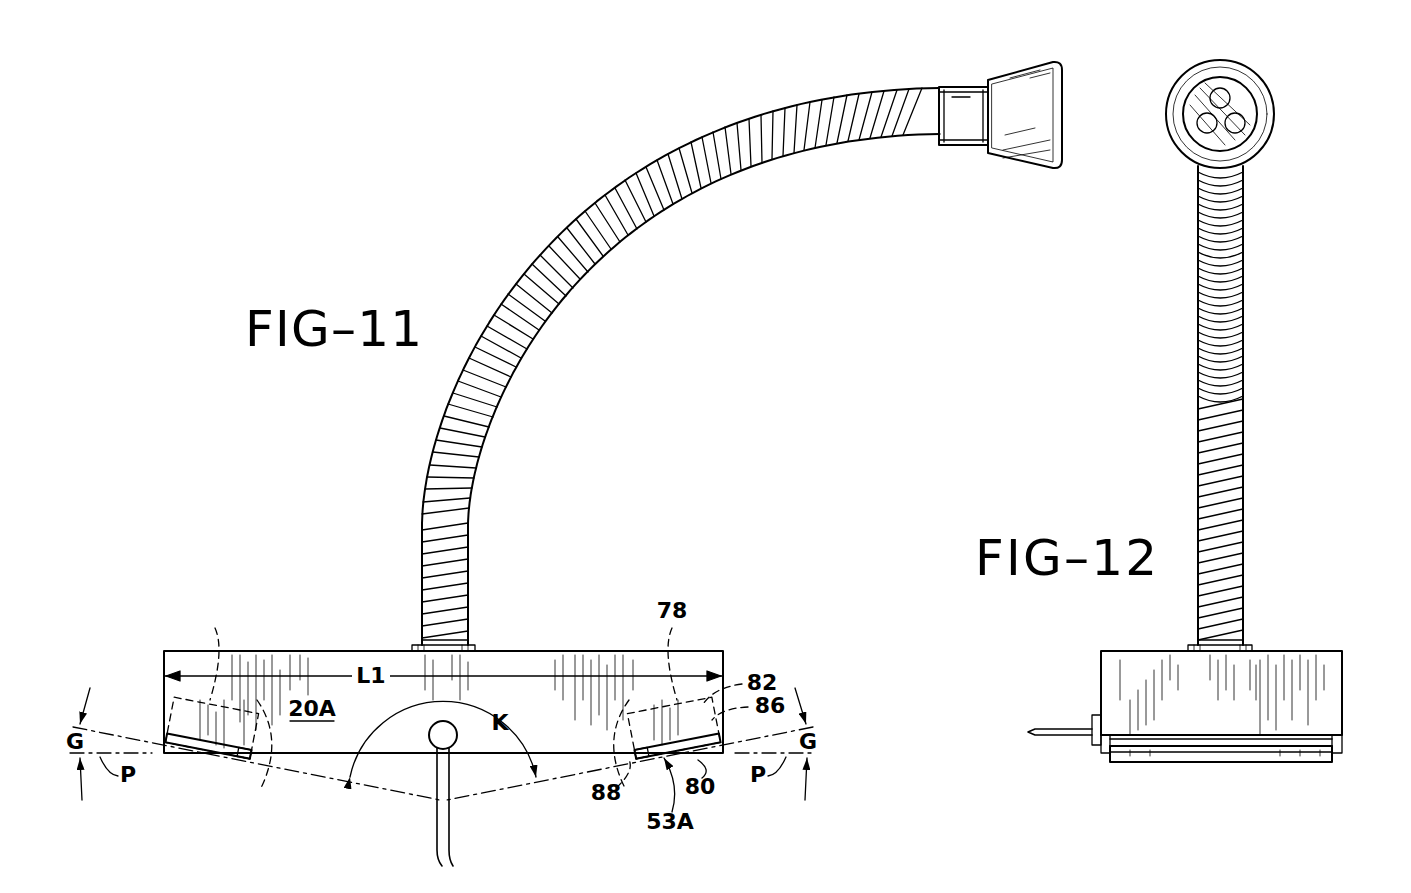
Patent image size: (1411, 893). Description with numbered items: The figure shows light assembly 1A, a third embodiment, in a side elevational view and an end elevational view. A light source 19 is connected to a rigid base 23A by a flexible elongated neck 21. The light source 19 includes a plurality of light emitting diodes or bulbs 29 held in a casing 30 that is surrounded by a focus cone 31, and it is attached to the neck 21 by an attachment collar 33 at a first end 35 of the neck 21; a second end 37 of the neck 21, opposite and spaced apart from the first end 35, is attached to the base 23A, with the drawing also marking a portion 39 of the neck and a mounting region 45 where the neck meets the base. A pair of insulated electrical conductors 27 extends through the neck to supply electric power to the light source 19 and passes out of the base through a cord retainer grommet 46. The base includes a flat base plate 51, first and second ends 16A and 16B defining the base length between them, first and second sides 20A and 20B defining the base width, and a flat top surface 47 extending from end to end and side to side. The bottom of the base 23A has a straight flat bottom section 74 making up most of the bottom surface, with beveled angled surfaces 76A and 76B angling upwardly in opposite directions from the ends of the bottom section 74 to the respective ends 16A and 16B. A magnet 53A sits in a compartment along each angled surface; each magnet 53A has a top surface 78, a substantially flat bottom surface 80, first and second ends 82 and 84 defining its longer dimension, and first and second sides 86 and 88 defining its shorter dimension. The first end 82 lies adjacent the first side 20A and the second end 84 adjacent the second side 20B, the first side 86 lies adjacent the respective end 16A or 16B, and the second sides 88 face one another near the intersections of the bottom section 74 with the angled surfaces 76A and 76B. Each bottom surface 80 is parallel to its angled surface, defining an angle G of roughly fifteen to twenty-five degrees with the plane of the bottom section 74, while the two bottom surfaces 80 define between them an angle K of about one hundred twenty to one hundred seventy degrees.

In FIG. 11, the light assembly 1A is at (358, 446).
In FIG. 12, the light assembly 1A is at (1180, 383).
In FIG. 11, the first end 16A is at (163, 663).
In FIG. 11, the second end 16B is at (724, 663).
In FIG. 12, the second end 16B is at (1118, 698).
In FIG. 11, the light source 19 is at (1013, 172).
In FIG. 12, the light source 19 is at (1256, 67).
In FIG. 12, the first side 20A is at (1100, 668).
In FIG. 12, the second side 20B is at (1343, 668).
In FIG. 11, the flexible elongated neck 21 is at (510, 280).
In FIG. 12, the flexible elongated neck 21 is at (1196, 438).
In FIG. 11, the base 23A is at (303, 653).
In FIG. 12, the base 23A is at (1100, 655).
In FIG. 11, the electrical conductors 27 is at (455, 850).
In FIG. 12, the electrical conductors 27 is at (1045, 735).
In FIG. 12, the light emitting diodes or bulbs 29 is at (1243, 127).
In FIG. 12, the casing 30 is at (1247, 100).
In FIG. 11, the focus cone 31 is at (1028, 75).
In FIG. 12, the focus cone 31 is at (1203, 67).
In FIG. 11, the attachment collar 33 is at (963, 85).
In FIG. 11, the first end of neck 35 is at (922, 146).
In FIG. 12, the first end of neck 35 is at (1257, 170).
In FIG. 11, the second end of neck 37 is at (478, 627).
In FIG. 12, the second end of neck 37 is at (1258, 628).
In FIG. 11, the flexible section 39 is at (430, 519).
In FIG. 12, the flexible section 39 is at (1196, 486).
In FIG. 11, the mounting plate 45 is at (415, 647).
In FIG. 12, the mounting plate 45 is at (1193, 646).
In FIG. 11, the cord retainer grommet 46 is at (452, 747).
In FIG. 12, the cord retainer grommet 46 is at (1090, 742).
In FIG. 11, the flat top surface 47 is at (574, 655).
In FIG. 12, the flat top surface 47 is at (1125, 650).
In FIG. 11, the flat base plate 51 is at (332, 662).
In FIG. 12, the flat base plate 51 is at (1268, 662).
In FIG. 11, the magnet 53A is at (222, 758).
In FIG. 12, the magnet 53A is at (1180, 760).
In FIG. 11, the flat bottom section 74 is at (368, 775).
In FIG. 11, the angled surface 76A is at (245, 762).
In FIG. 11, the angled surface 76B is at (641, 762).
In FIG. 12, the angled surface 76B is at (1338, 743).
In FIG. 11, the top surface of magnet 78 is at (215, 649).
In FIG. 11, the bottom surface of magnet 80 is at (186, 760).
In FIG. 12, the bottom surface of magnet 80 is at (1255, 760).
In FIG. 11, the first end of magnet 82 is at (185, 706).
In FIG. 12, the first end of magnet 82 is at (1106, 758).
In FIG. 12, the second end of magnet 84 is at (1335, 760).
In FIG. 11, the first side of magnet 86 is at (175, 720).
In FIG. 12, the first side of magnet 86 is at (1218, 742).
In FIG. 11, the second side of magnet 88 is at (258, 758).